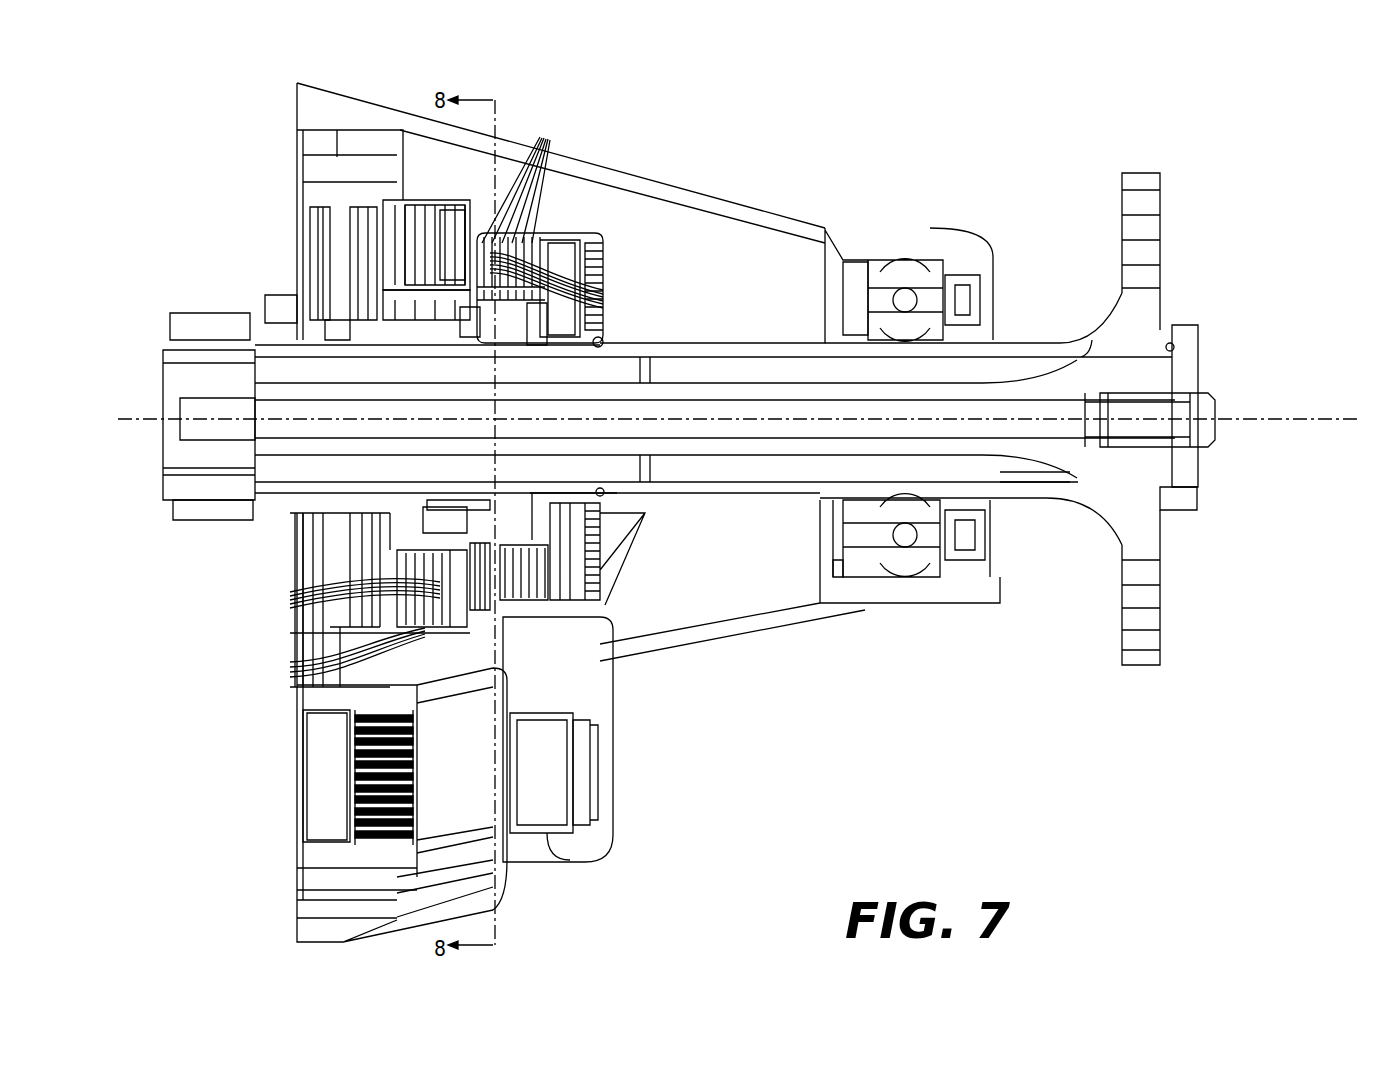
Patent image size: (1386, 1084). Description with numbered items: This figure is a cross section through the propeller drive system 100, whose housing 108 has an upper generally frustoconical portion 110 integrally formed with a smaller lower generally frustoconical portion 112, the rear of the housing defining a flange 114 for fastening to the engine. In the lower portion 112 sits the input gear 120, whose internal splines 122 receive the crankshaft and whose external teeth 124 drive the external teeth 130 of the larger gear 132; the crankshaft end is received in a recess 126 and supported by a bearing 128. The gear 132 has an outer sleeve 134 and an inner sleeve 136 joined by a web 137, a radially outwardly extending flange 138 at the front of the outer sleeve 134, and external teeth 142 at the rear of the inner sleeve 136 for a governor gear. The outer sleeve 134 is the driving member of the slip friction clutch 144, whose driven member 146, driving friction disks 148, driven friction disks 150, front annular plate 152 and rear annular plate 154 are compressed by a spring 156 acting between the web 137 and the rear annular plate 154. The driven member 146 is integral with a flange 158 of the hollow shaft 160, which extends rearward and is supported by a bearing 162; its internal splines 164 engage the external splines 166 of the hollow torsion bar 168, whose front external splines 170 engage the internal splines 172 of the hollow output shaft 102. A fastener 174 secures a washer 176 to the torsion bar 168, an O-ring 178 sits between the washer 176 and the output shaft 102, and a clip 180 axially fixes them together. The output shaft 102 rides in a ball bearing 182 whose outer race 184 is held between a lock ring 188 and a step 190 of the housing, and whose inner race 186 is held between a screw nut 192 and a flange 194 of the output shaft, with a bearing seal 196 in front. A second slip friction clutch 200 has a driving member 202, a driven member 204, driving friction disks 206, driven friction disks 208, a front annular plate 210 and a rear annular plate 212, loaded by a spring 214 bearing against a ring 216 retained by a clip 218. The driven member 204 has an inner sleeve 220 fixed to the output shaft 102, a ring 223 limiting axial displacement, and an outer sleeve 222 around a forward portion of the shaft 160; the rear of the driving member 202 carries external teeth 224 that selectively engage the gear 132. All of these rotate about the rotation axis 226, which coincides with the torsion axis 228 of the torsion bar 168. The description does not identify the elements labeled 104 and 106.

The propeller drive system 100 is at (826, 168).
The output shaft 102 is at (1010, 497).
The flange 104 is at (1145, 535).
The gear teeth 106 is at (1140, 262).
The housing 108 is at (703, 242).
The upper generally frustoconical portion 110 is at (753, 198).
The lower generally frustoconical portion 112 is at (498, 880).
The flange 114 is at (300, 97).
The input gear 120 is at (325, 780).
The internal splines 122 is at (379, 742).
The external teeth 124 is at (329, 878).
The recess 126 is at (571, 770).
The bearing 128 is at (545, 835).
The external teeth 130 is at (319, 167).
The gear 132 is at (312, 190).
The outer sleeve 134 is at (405, 275).
The inner sleeve 136 is at (332, 325).
The web 137 is at (337, 278).
The radially outwardly extending flange 138 is at (497, 247).
The external teeth 142 is at (262, 305).
The slip friction clutch 144 is at (425, 650).
The driven member 146 is at (395, 527).
The driving friction disks 148 is at (333, 595).
The driven friction disks 150 is at (347, 596).
The front annular plate 152 is at (590, 765).
The rear annular plate 154 is at (305, 632).
The spring 156 is at (395, 522).
The flange 158 is at (412, 312).
The hollow shaft 160 is at (228, 488).
The bearing 162 is at (163, 505).
The internal splines 164 is at (170, 475).
The external splines 166 is at (185, 468).
The torsion bar 168 is at (697, 445).
The external splines 170 is at (1082, 360).
The internal splines 172 is at (1130, 360).
The fastener 174 is at (1201, 405).
The washer 176 is at (1180, 370).
The O-ring 178 is at (1170, 347).
The clip 180 is at (1192, 497).
The ball bearing 182 is at (903, 285).
The outer race 184 is at (893, 575).
The inner race 186 is at (933, 507).
The lock ring 188 is at (866, 574).
The step 190 is at (963, 567).
The screw nut 192 is at (850, 315).
The flange 194 is at (978, 318).
The bearing seal 196 is at (963, 300).
The slip friction clutch 200 is at (540, 668).
The driving member 202 is at (543, 616).
The driven member 204 is at (545, 303).
The driving friction disks 206 is at (545, 138).
The driven friction disks 208 is at (600, 298).
The front annular plate 210 is at (557, 262).
The rear annular plate 212 is at (440, 222).
The spring 214 is at (572, 265).
The ring 216 is at (573, 582).
The clip 218 is at (583, 598).
The inner sleeve 220 is at (585, 360).
The outer sleeve 222 is at (503, 295).
The ring 223 is at (600, 490).
The external teeth 224 is at (467, 240).
The rotation axis 226 is at (1022, 425).
The torsion axis 228 is at (1048, 516).